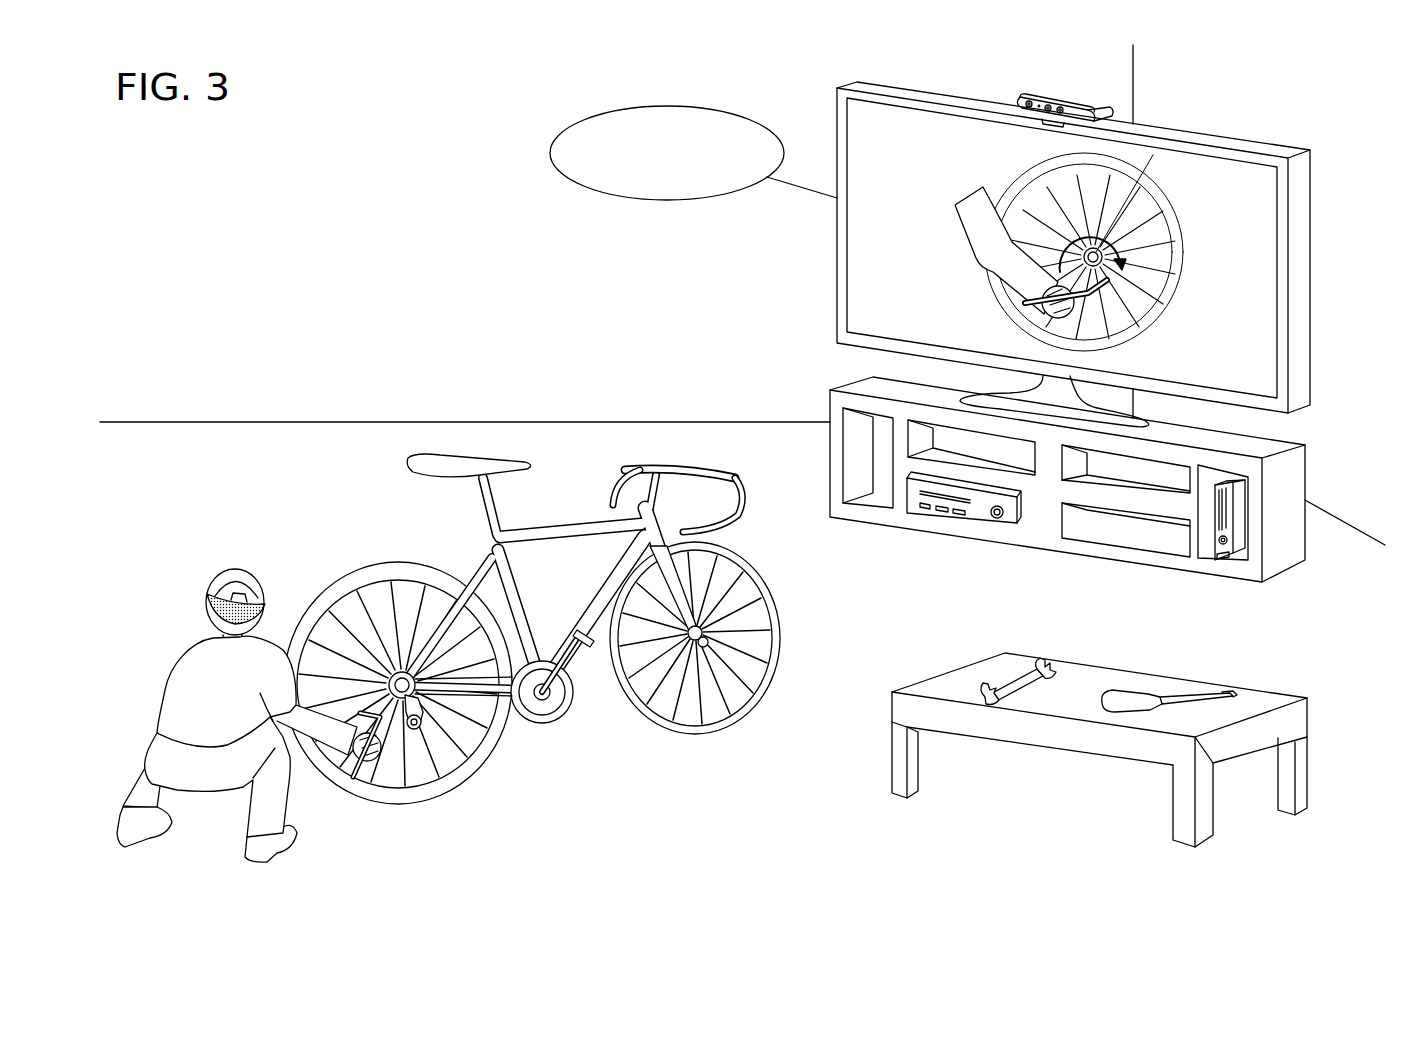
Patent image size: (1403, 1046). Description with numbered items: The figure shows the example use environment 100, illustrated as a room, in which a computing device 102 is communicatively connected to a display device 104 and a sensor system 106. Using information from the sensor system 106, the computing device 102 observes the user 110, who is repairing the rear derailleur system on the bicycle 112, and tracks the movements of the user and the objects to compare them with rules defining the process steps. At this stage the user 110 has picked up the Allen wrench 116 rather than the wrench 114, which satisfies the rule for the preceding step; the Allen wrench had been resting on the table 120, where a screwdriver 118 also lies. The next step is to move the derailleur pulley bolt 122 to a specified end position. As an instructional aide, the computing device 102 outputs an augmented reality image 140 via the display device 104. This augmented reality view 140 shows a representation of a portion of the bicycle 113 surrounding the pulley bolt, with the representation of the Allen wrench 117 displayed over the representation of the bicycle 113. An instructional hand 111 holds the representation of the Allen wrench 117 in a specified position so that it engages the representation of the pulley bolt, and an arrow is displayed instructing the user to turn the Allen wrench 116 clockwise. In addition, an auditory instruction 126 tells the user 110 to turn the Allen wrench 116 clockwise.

The use environment 100 is at (336, 135).
The computing device 102 is at (1227, 557).
The display device 104 is at (1305, 198).
The sensor system 106 is at (1112, 108).
The user 110 is at (182, 656).
The instructional hand 111 is at (972, 240).
The bicycle 112 is at (535, 530).
The representation of a portion of the bicycle 113 is at (1021, 180).
The wrench 114 is at (1040, 666).
The Allen wrench 116 is at (355, 777).
The representation of the Allen wrench 117 is at (1098, 297).
The screwdriver 118 is at (1138, 698).
The table 120 is at (1275, 706).
The derailleur pulley bolt 122 is at (419, 730).
The auditory instruction 126 is at (720, 110).
The augmented reality image 140 is at (1202, 207).